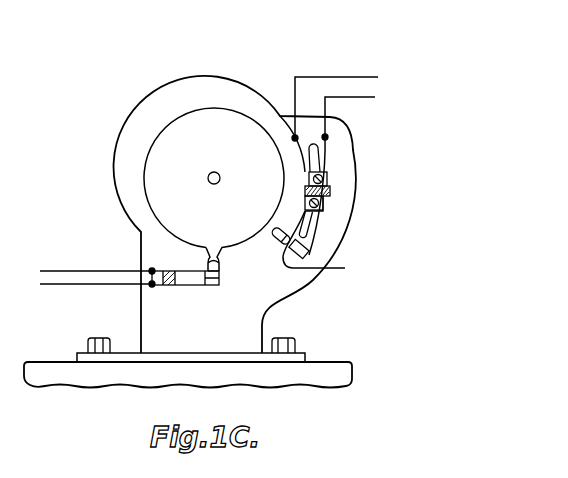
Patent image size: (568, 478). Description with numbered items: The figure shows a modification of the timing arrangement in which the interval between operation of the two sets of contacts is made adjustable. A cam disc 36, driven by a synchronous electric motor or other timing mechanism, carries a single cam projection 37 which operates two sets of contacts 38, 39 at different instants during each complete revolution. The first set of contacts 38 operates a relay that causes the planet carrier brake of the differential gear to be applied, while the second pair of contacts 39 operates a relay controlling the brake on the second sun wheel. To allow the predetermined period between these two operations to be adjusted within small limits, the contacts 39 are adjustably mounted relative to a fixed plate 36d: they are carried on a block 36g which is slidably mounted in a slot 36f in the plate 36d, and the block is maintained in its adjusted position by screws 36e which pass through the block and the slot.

The cam disc 36 is at (222, 154).
The fixed plate 36d is at (241, 92).
The screws 36e is at (323, 199).
The slot 36f is at (315, 155).
The block 36g is at (323, 208).
The cam projection 37 is at (219, 257).
The first set of contacts 38 is at (221, 283).
The second pair of contacts 39 is at (326, 246).